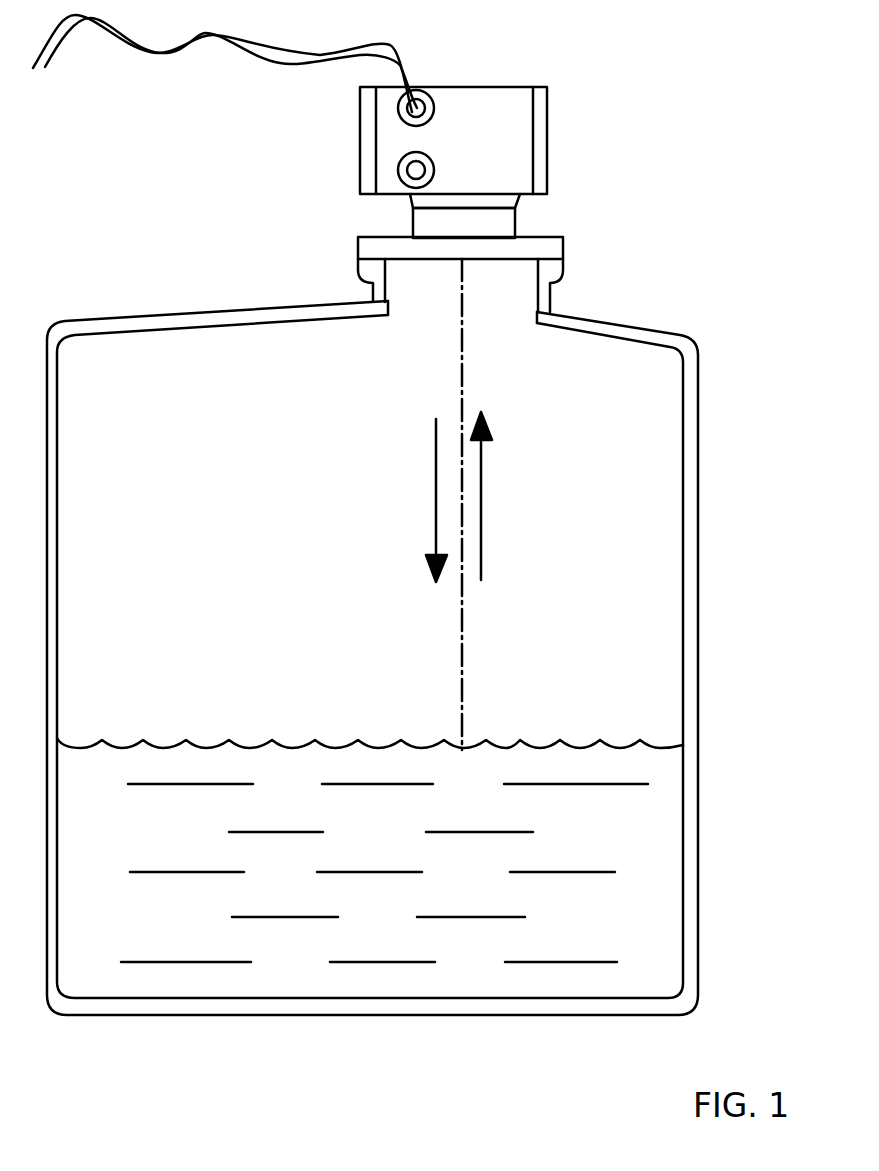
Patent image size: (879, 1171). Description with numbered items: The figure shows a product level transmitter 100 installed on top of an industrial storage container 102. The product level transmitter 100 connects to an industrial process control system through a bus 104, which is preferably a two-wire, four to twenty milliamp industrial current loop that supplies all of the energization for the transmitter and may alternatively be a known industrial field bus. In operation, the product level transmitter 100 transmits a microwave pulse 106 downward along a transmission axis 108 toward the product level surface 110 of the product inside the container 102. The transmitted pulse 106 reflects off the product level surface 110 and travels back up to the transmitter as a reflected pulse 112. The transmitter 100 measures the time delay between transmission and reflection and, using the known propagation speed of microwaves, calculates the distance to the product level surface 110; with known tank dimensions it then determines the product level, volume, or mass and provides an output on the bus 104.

The product level transmitter 100 is at (547, 145).
The industrial storage container 102 is at (603, 320).
The bus 104 is at (370, 45).
The microwave pulse 106 is at (430, 567).
The transmission axis 108 is at (460, 404).
The product level surface 110 is at (433, 747).
The reflected pulse 112 is at (488, 424).